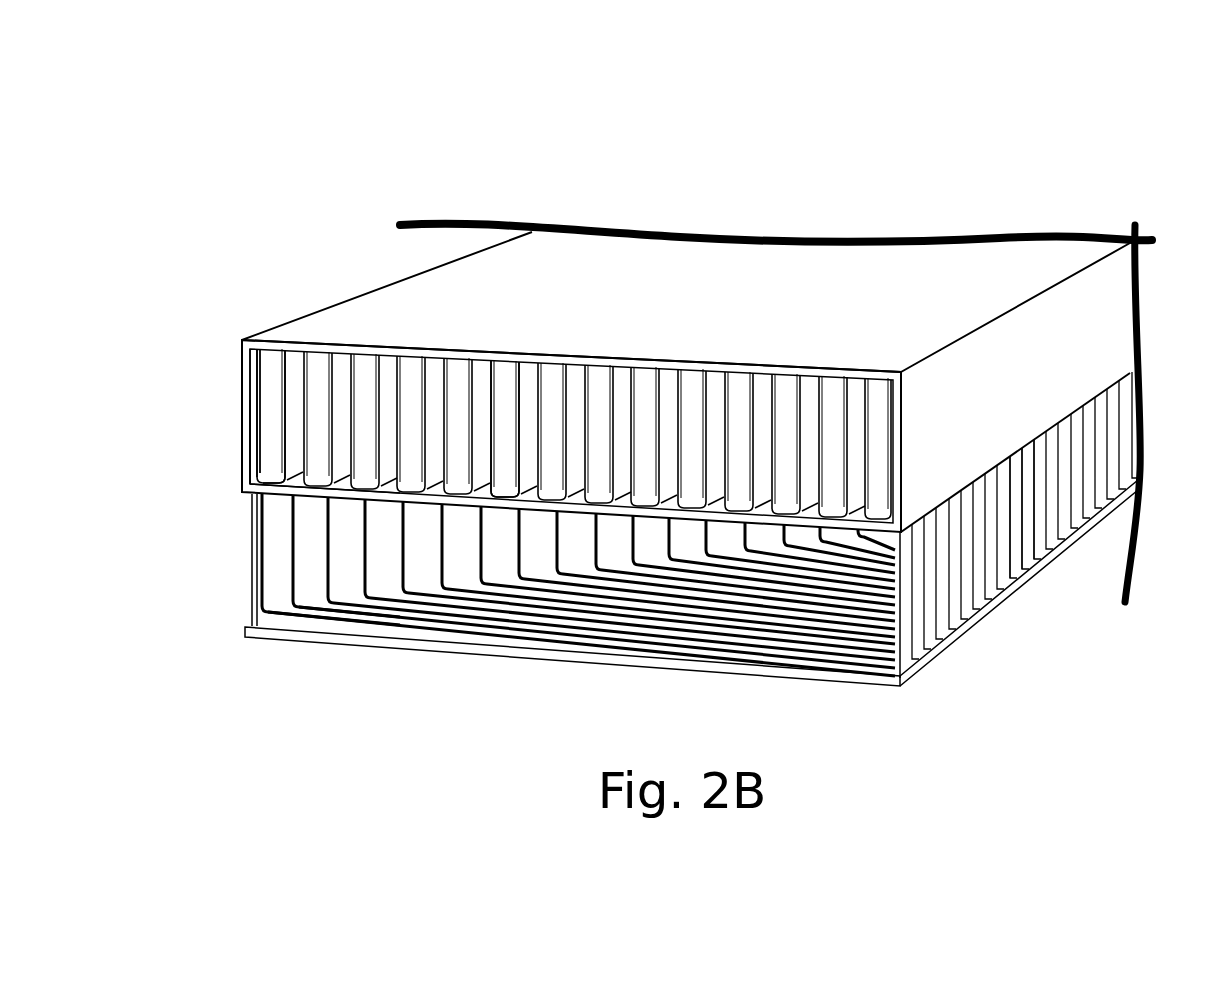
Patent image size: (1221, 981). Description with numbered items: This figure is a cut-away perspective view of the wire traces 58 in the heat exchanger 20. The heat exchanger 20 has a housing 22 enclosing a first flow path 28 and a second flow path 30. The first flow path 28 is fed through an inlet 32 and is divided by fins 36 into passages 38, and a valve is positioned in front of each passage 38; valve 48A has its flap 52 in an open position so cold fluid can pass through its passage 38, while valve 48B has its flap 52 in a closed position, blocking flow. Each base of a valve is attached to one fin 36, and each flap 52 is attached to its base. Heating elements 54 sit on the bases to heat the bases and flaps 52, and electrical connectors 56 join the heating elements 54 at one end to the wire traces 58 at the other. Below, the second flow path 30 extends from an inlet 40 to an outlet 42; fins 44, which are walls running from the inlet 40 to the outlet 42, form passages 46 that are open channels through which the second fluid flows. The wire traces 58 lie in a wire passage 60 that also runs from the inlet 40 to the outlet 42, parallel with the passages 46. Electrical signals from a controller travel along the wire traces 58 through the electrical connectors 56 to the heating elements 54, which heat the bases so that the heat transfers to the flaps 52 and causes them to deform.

The heat exchanger 20 is at (262, 130).
The housing 22 is at (687, 292).
The first flow path 28 is at (229, 407).
The second flow path 30 is at (1090, 458).
The inlet 32 is at (492, 372).
The fins 36 is at (277, 362).
The passages 38 is at (273, 447).
The inlet 40 is at (968, 654).
The outlet 42 is at (238, 553).
The fins 44 is at (1013, 567).
The passages 46 is at (1003, 615).
The valve 48A is at (234, 378).
The valve 48B is at (291, 338).
The flaps 52 is at (240, 352).
The heating elements 54 is at (252, 440).
The electrical connectors 56 is at (253, 492).
The wire traces 58 is at (282, 613).
The wire passage 60 is at (902, 690).